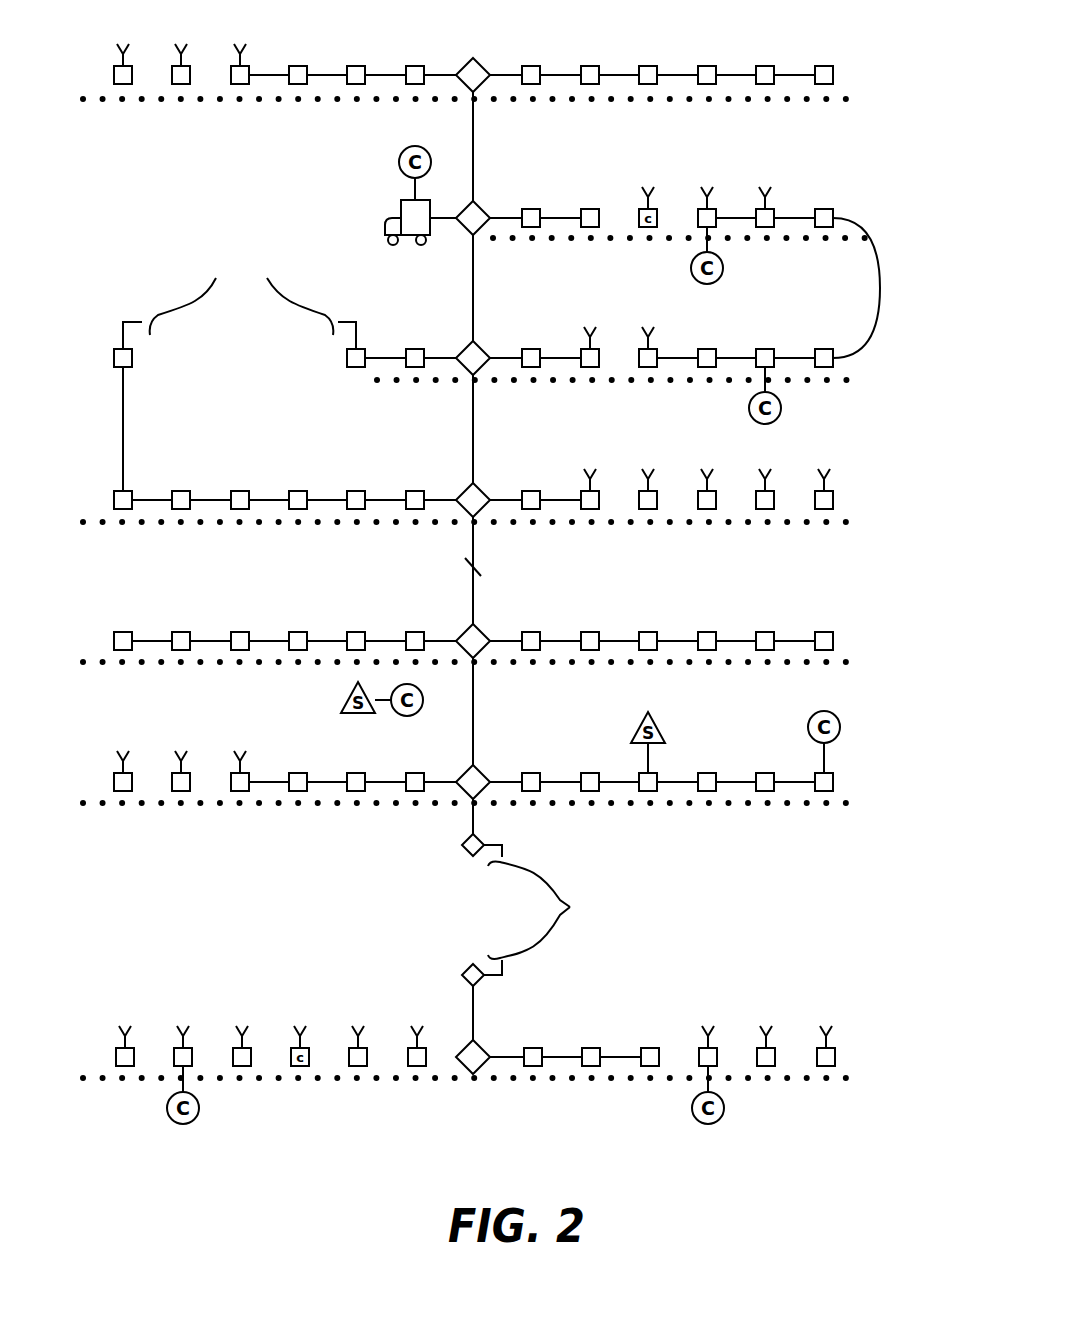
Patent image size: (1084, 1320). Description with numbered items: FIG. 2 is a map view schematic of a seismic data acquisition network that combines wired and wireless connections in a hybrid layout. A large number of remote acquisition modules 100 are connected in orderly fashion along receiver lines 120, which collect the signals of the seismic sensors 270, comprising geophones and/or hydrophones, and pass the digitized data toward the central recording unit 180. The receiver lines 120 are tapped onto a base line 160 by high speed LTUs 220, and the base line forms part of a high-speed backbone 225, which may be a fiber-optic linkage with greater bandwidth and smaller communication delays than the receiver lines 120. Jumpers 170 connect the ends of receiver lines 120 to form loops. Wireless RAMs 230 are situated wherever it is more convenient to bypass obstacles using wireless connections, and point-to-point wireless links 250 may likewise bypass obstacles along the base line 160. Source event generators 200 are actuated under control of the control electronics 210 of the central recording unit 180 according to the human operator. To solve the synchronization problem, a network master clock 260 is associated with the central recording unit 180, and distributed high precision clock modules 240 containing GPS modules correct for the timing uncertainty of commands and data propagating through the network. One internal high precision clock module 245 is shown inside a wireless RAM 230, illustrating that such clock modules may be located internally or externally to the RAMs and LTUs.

The remote acquisition module 100 is at (651, 66).
The receiver line 120 is at (736, 73).
The base line 160 is at (473, 563).
The jumper 170 is at (863, 222).
The central recording unit 180 is at (397, 244).
The source event generator 200 is at (343, 700).
The control electronics 210 is at (387, 220).
The high speed LTU 220 is at (485, 62).
The high-speed backbone 225 is at (473, 563).
The wireless RAM 230 is at (130, 67).
The high precision clock module 240 is at (723, 268).
The internal high precision clock module 245 is at (650, 207).
The point-to-point wireless link 250 is at (595, 907).
The network master clock 260 is at (400, 157).
The seismic sensor 270 is at (222, 100).